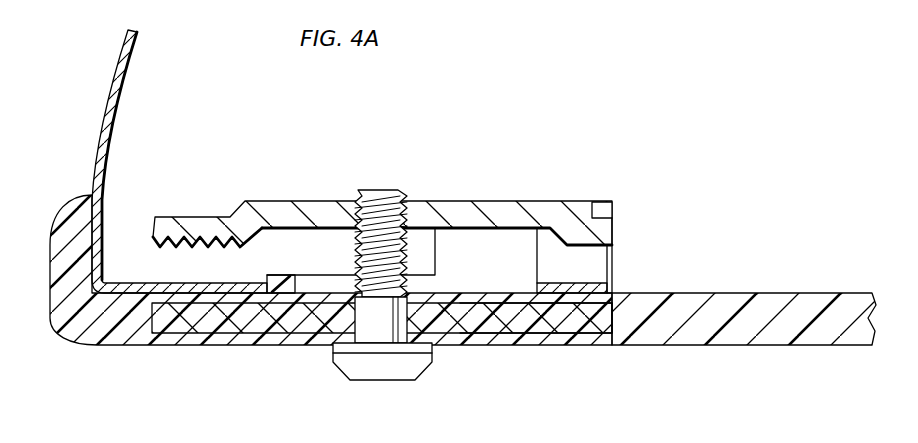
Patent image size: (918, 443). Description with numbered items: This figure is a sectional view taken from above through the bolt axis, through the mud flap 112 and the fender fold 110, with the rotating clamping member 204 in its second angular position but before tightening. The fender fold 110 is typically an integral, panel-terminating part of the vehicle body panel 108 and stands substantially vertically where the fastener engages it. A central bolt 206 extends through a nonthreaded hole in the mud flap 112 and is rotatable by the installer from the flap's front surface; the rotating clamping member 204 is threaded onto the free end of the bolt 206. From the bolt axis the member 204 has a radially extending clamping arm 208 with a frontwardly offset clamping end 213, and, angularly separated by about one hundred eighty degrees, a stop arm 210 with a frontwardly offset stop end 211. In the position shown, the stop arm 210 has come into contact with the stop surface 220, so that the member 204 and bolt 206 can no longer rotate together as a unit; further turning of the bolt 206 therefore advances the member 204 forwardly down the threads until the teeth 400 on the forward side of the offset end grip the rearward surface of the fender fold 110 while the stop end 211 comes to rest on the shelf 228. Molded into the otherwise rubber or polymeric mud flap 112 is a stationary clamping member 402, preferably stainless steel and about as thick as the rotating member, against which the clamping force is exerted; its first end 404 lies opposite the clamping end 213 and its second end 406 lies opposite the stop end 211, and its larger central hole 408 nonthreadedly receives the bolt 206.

The body panel 108 is at (95, 140).
The fender fold 110 is at (112, 295).
The mud flap 112 is at (742, 345).
The rotating clamping member 204 is at (408, 191).
The bolt 206 is at (382, 283).
The clamping arm 208 is at (369, 195).
The stop arm 210 is at (592, 212).
The stop end 211 is at (613, 230).
The clamping end 213 is at (155, 230).
The stop surface 220 is at (602, 263).
The shelf 228 is at (535, 288).
The teeth 400 is at (408, 214).
The stationary clamping member 402 is at (382, 349).
The first end 404 is at (173, 333).
The second end 406 is at (578, 342).
The central hole 408 is at (360, 318).